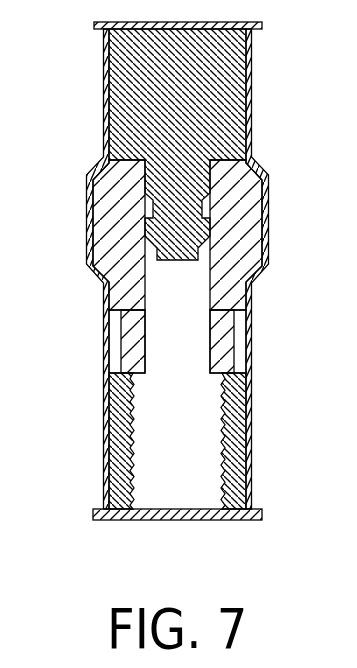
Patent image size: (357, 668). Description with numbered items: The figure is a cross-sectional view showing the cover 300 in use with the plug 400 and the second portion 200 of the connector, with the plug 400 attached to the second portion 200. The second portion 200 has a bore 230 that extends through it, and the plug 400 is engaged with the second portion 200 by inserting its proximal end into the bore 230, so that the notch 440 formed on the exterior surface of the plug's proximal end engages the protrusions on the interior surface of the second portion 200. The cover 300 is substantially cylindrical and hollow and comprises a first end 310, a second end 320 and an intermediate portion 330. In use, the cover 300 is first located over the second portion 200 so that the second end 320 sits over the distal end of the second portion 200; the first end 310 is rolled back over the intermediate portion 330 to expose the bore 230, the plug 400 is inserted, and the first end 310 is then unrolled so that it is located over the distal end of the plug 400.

The first end 310 is at (104, 90).
The plug 400 is at (220, 71).
The intermediate portion 330 is at (87, 218).
The notch 440 is at (203, 200).
The second portion 200 is at (133, 278).
The bore 230 is at (170, 438).
The second end 320 is at (252, 432).
The cover 300 is at (262, 331).